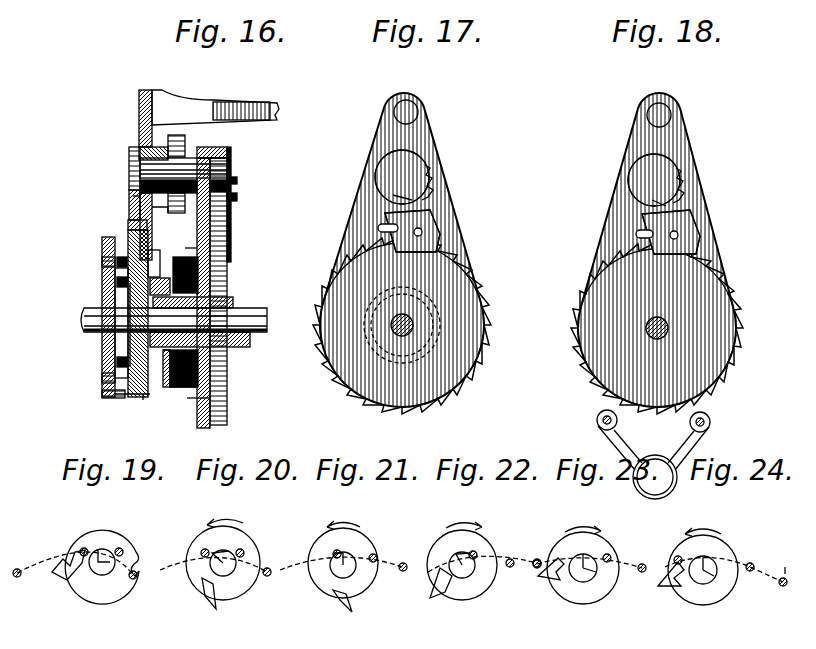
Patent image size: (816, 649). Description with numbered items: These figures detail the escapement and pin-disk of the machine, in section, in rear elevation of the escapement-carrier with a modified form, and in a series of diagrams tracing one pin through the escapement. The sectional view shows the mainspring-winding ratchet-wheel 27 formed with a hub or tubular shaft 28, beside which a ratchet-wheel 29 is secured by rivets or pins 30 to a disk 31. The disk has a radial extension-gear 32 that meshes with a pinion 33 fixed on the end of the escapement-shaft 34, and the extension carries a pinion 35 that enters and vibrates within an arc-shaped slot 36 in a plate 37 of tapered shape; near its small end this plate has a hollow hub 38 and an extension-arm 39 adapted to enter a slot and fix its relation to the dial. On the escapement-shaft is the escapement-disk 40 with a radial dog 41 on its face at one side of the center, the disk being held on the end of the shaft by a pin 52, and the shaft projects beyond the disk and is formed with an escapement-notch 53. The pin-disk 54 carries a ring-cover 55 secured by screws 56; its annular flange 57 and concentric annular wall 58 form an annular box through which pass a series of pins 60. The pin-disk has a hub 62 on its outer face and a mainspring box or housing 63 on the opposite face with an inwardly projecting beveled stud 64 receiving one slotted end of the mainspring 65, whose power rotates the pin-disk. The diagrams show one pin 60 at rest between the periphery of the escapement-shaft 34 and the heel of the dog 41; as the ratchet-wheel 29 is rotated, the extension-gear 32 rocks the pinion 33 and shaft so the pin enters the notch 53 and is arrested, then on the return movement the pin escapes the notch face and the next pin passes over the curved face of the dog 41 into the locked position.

In FIG. 16, the mainspring-winding ratchet-wheel 27 is at (102, 384).
In FIG. 17, the mainspring-winding ratchet-wheel 27 is at (460, 341).
In FIG. 18, the mainspring-winding ratchet-wheel 27 is at (726, 316).
In FIG. 16, the hub or tubular shaft 28 is at (102, 302).
In FIG. 16, the ratchet-wheel 29 is at (120, 400).
In FIG. 16, the rivets or pins 30 is at (102, 263).
In FIG. 16, the disk 31 is at (135, 400).
In FIG. 16, the radial extension-gear 32 is at (133, 197).
In FIG. 17, the radial extension-gear 32 is at (432, 219).
In FIG. 18, the radial extension-gear 32 is at (692, 217).
In FIG. 16, the pinion 33 is at (140, 162).
In FIG. 17, the pinion 33 is at (428, 179).
In FIG. 18, the pinion 33 is at (642, 176).
In FIG. 16, the escapement-shaft 34 is at (132, 212).
In FIG. 19, the escapement-shaft 34 is at (96, 574).
In FIG. 20, the escapement-shaft 34 is at (230, 572).
In FIG. 21, the escapement-shaft 34 is at (350, 572).
In FIG. 22, the escapement-shaft 34 is at (465, 578).
In FIG. 23, the escapement-shaft 34 is at (598, 580).
In FIG. 24, the escapement-shaft 34 is at (712, 582).
In FIG. 16, the pinion 35 is at (128, 227).
In FIG. 17, the pinion 35 is at (422, 233).
In FIG. 18, the pinion 35 is at (678, 237).
In FIG. 16, the arc-shaped slot 36 is at (166, 221).
In FIG. 17, the arc-shaped slot 36 is at (378, 229).
In FIG. 18, the arc-shaped slot 36 is at (636, 235).
In FIG. 16, the plate 37 is at (143, 400).
In FIG. 17, the plate 37 is at (383, 208).
In FIG. 18, the plate 37 is at (614, 208).
In FIG. 16, the hollow hub 38 is at (140, 136).
In FIG. 16, the extension-arm 39 is at (230, 112).
In FIG. 17, the extension-arm 39 is at (412, 109).
In FIG. 18, the extension-arm 39 is at (665, 113).
In FIG. 19, the escapement-disk 40 is at (102, 573).
In FIG. 20, the escapement-disk 40 is at (209, 565).
In FIG. 21, the escapement-disk 40 is at (334, 568).
In FIG. 22, the escapement-disk 40 is at (471, 568).
In FIG. 23, the escapement-disk 40 is at (583, 579).
In FIG. 24, the escapement-disk 40 is at (703, 582).
In FIG. 19, the radial dog 41 is at (58, 576).
In FIG. 20, the radial dog 41 is at (206, 600).
In FIG. 21, the radial dog 41 is at (336, 614).
In FIG. 22, the radial dog 41 is at (436, 585).
In FIG. 23, the radial dog 41 is at (549, 578).
In FIG. 24, the radial dog 41 is at (668, 582).
In FIG. 16, the pin 52 is at (176, 137).
In FIG. 19, the escapement-notch 53 is at (99, 549).
In FIG. 20, the escapement-notch 53 is at (230, 556).
In FIG. 21, the escapement-notch 53 is at (330, 566).
In FIG. 22, the escapement-notch 53 is at (465, 555).
In FIG. 23, the escapement-notch 53 is at (590, 555).
In FIG. 24, the escapement-notch 53 is at (712, 558).
In FIG. 16, the pin-disk 54 is at (197, 394).
In FIG. 16, the ring-cover 55 is at (239, 291).
In FIG. 16, the screws 56 is at (238, 181).
In FIG. 16, the annular flange 57 is at (222, 151).
In FIG. 16, the concentric annular wall 58 is at (238, 198).
In FIG. 16, the pins 60 is at (232, 172).
In FIG. 19, the pins 60 is at (84, 551).
In FIG. 20, the pins 60 is at (205, 553).
In FIG. 21, the pins 60 is at (340, 553).
In FIG. 22, the pins 60 is at (477, 556).
In FIG. 23, the pins 60 is at (610, 557).
In FIG. 24, the pins 60 is at (752, 565).
In FIG. 16, the hub 62 is at (233, 310).
In FIG. 16, the mainspring box or housing 63 is at (227, 264).
In FIG. 16, the beveled stud 64 is at (222, 248).
In FIG. 16, the mainspring 65 is at (220, 262).